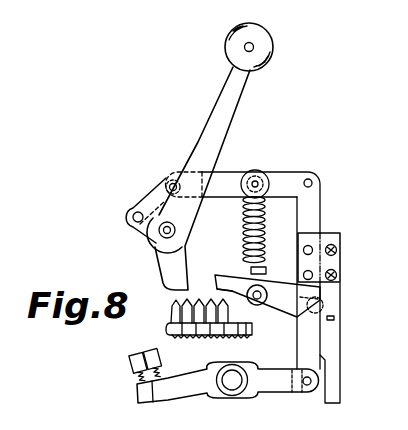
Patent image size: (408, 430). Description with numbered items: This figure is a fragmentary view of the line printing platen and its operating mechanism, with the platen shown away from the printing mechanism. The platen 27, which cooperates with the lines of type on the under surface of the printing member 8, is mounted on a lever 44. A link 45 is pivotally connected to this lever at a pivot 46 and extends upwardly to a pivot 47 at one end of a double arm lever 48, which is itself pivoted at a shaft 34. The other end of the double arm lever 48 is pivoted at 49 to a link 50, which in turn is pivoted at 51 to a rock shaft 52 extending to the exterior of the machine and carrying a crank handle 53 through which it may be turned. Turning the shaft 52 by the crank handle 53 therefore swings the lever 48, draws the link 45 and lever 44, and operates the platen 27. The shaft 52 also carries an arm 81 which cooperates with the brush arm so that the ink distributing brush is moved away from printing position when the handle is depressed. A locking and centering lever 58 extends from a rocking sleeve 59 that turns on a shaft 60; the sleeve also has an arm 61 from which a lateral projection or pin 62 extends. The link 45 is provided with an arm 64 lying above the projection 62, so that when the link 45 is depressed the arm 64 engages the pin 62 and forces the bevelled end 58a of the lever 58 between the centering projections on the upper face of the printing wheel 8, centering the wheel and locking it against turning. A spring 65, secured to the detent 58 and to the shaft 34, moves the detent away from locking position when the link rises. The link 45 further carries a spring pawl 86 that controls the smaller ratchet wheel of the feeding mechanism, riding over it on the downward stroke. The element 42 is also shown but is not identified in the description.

The crank handle 53 is at (252, 22).
The arm 81 is at (166, 264).
The link 50 is at (142, 193).
The pivot 51 is at (128, 212).
The rock shaft 52 is at (163, 224).
The pivot 49 is at (173, 182).
The double arm lever 48 is at (231, 170).
The pivot shaft 34 is at (258, 172).
The pivot 47 is at (313, 176).
The spring 65 is at (265, 226).
The link 45 is at (308, 340).
The arm 64 is at (267, 268).
The spring pawl 86 is at (334, 375).
The locking and centering lever 58 is at (272, 313).
The bevelled end 58a is at (216, 288).
The lateral projection 62 is at (257, 305).
The rocking sleeve 59 is at (322, 302).
The shaft 60 is at (334, 314).
The arm 61 is at (280, 300).
The printing member 8 is at (166, 330).
The lever 44 is at (185, 397).
The pivot 46 is at (307, 388).
The platen 27 is at (130, 367).
The member 42 is at (210, 427).